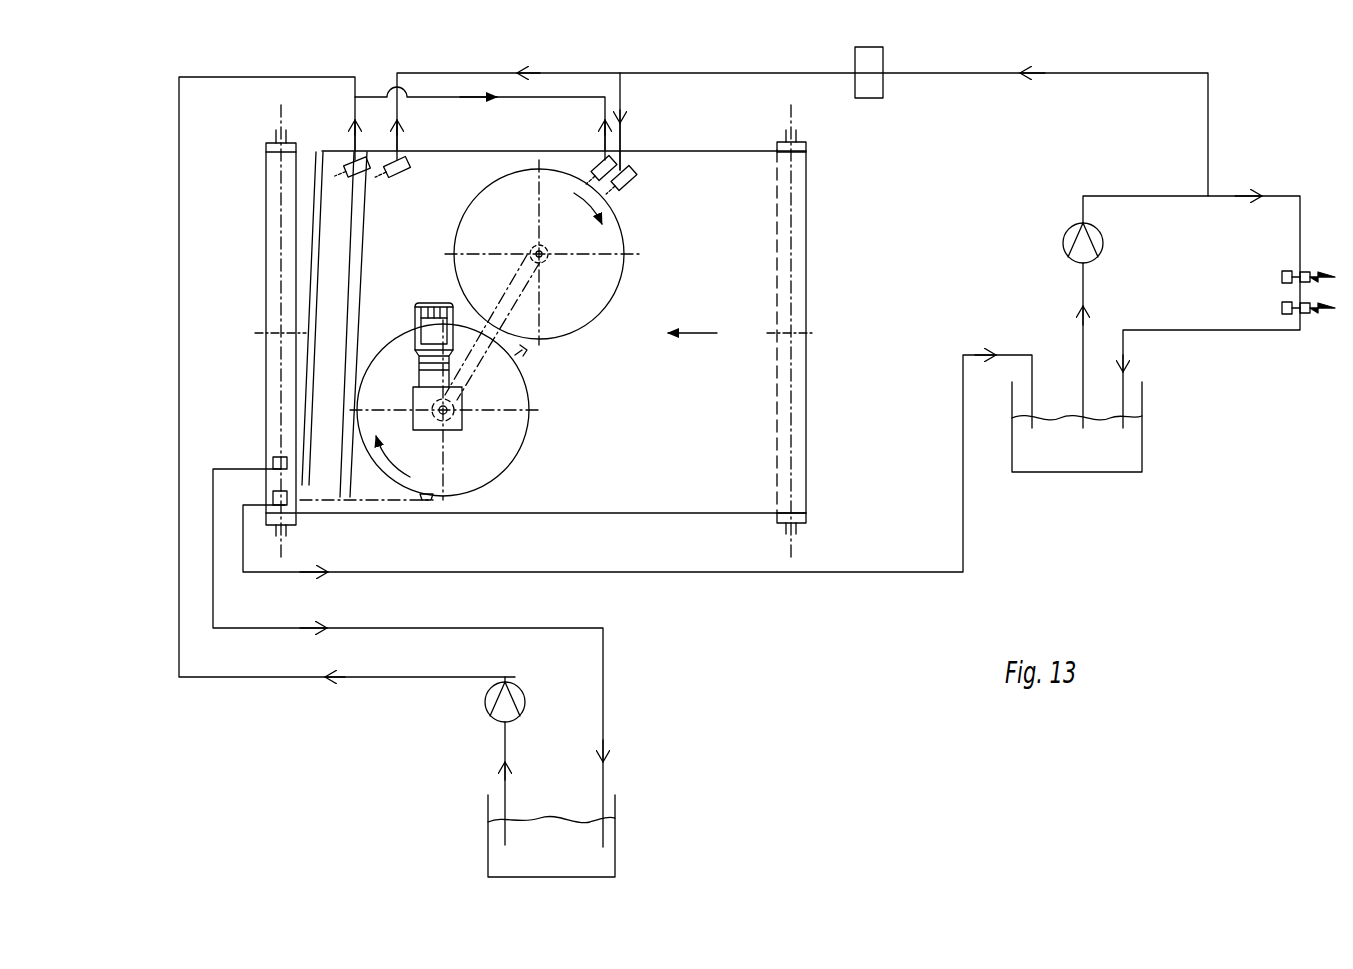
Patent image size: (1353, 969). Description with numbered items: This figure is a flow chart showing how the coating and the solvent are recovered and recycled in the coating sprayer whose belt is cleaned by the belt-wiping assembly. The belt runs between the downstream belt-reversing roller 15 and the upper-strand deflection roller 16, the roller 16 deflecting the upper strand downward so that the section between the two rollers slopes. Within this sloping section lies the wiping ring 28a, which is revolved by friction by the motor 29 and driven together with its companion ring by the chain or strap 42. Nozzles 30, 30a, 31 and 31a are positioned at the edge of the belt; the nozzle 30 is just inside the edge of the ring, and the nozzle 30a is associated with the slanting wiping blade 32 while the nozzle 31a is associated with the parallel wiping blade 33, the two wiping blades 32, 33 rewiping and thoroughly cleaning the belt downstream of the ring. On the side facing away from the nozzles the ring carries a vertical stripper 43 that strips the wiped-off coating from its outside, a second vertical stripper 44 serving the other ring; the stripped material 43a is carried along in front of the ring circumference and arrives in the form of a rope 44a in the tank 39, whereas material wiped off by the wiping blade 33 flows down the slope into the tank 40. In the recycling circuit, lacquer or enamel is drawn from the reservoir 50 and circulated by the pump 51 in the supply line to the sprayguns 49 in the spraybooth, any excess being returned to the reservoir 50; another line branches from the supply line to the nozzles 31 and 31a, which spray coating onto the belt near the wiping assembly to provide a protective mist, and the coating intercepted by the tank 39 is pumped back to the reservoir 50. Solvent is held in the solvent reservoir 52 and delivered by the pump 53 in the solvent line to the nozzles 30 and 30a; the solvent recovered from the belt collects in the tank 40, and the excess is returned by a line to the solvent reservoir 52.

The downstream belt-reversing roller 15 is at (268, 285).
The upper-strand deflection roller 16 is at (800, 208).
The wiping ring 28a is at (626, 247).
The motor 29 is at (427, 298).
The nozzle 30 is at (600, 158).
The nozzle 30a is at (354, 158).
The nozzle 31 is at (624, 170).
The nozzle 31a is at (392, 157).
The wiping blade 32 is at (355, 242).
The wiping blade 33 is at (318, 197).
The tank 39 is at (275, 497).
The tank 40 is at (275, 462).
The chain or strap 42 is at (522, 428).
The vertical stripper 43 is at (530, 344).
The stripped material 43a is at (520, 356).
The vertical stripper 44 is at (428, 500).
The rope 44a is at (362, 503).
The sprayguns 49 is at (1310, 302).
The reservoir 50 is at (1143, 445).
The pump 51 is at (1072, 241).
The solvent reservoir 52 is at (615, 830).
The pump 53 is at (500, 703).